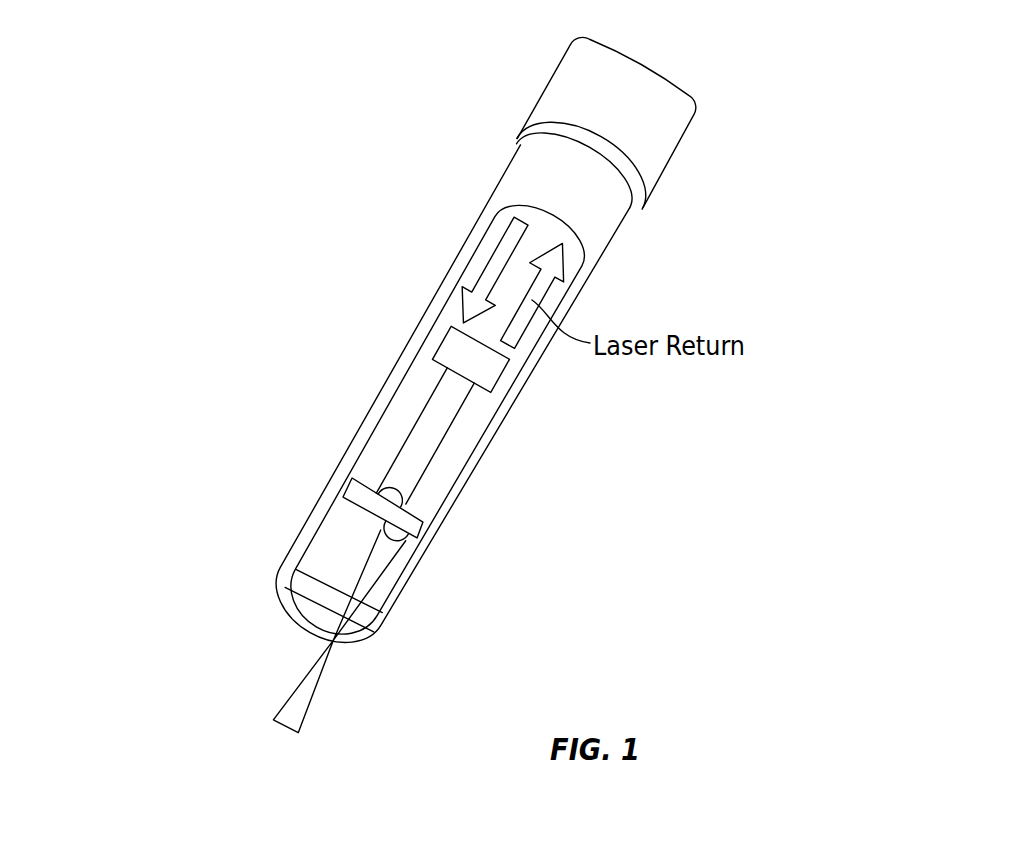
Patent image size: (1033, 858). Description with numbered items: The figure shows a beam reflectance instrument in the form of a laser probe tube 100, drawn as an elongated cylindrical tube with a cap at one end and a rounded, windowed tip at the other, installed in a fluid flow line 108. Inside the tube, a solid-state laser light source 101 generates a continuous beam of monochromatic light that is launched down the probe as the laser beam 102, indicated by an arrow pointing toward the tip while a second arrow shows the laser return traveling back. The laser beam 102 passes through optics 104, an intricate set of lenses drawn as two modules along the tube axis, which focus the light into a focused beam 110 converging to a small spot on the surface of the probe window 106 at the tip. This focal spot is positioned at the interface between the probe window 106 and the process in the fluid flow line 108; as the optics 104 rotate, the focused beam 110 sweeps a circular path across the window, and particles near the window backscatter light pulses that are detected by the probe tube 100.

The probe tube 100 is at (403, 367).
The solid-state laser light source 101 is at (490, 276).
The laser beam 102 is at (400, 462).
The optics 104 is at (413, 527).
The probe window 106 is at (297, 571).
The fluid flow line 108 is at (292, 710).
The focused beam 110 is at (347, 630).